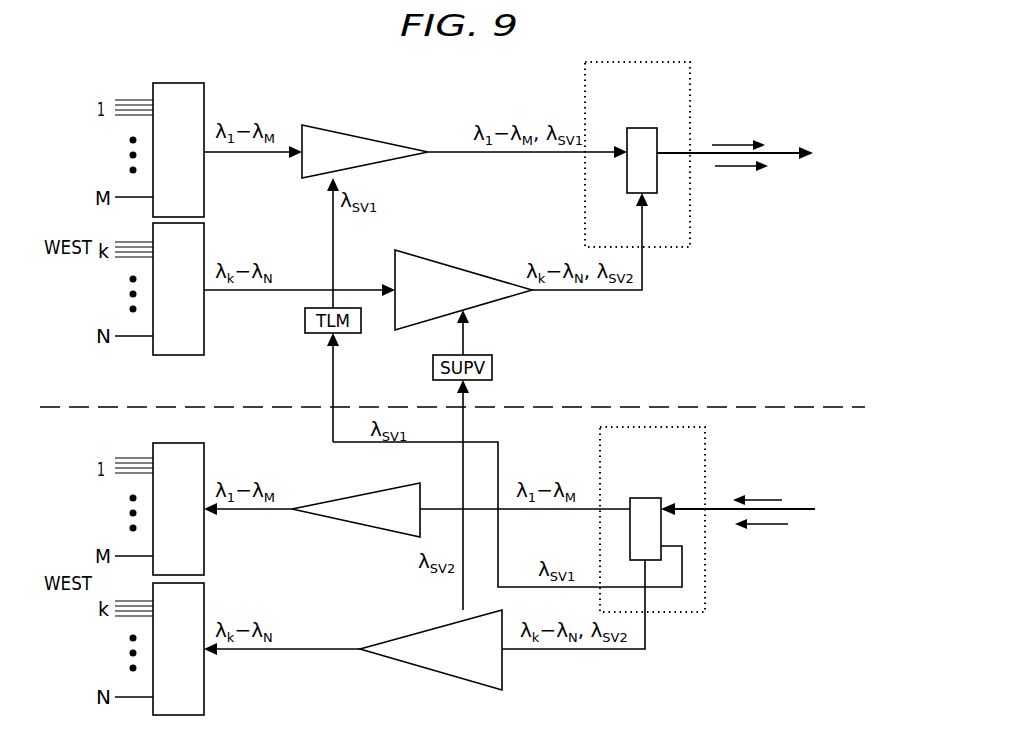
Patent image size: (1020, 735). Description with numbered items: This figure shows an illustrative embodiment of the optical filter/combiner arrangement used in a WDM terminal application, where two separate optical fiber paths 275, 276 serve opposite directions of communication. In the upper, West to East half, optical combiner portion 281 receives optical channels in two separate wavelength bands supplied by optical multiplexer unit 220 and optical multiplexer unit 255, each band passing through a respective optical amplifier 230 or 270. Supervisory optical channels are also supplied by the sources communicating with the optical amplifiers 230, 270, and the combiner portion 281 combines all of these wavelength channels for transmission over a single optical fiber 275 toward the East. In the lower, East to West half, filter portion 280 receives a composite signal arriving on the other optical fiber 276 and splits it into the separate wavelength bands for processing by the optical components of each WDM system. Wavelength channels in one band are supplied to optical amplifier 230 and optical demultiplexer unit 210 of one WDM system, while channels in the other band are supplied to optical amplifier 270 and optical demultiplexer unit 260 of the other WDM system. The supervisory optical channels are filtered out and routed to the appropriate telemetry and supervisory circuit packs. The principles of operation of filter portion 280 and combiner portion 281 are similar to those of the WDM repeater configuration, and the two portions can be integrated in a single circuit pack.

The optical multiplexer unit 220 is at (205, 97).
The optical multiplexer unit 255 is at (205, 339).
The optical amplifier 230 is at (350, 134).
The optical amplifier 270 is at (447, 265).
The combiner portion 281 is at (640, 62).
The optical fiber 275 is at (778, 157).
The optical demultiplexer unit 210 is at (205, 467).
The optical demultiplexer unit 260 is at (205, 704).
The filter portion 280 is at (677, 613).
The optical fiber 276 is at (800, 512).